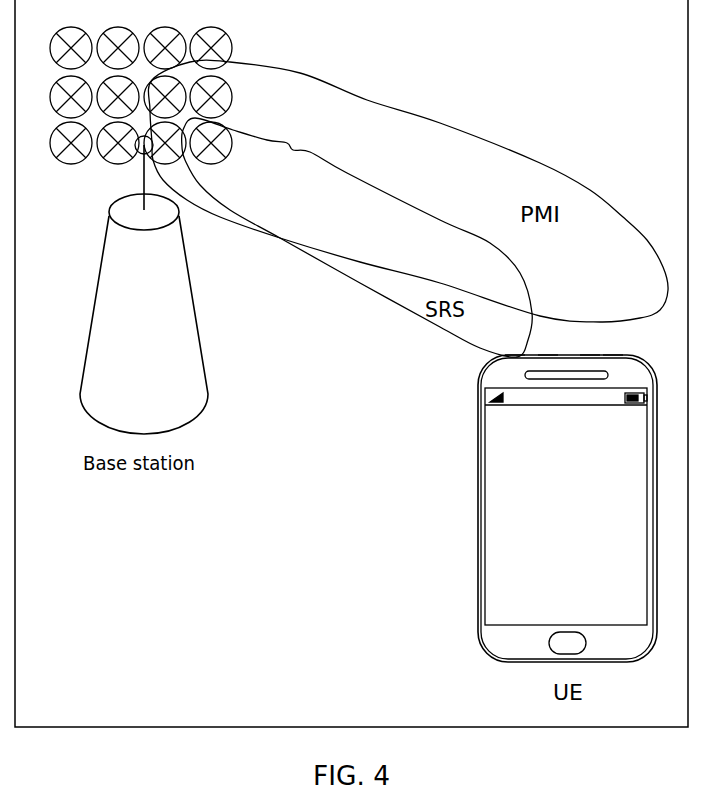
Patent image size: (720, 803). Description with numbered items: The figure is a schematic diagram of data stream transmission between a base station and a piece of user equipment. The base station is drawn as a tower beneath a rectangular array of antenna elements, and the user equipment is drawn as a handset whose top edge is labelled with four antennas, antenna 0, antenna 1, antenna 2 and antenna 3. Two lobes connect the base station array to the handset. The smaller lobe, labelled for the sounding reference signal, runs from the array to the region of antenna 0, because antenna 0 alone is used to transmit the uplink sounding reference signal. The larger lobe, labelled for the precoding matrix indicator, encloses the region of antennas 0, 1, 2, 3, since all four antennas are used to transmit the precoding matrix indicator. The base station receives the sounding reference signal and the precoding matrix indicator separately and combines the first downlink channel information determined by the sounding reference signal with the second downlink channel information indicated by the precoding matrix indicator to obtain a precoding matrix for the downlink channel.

The antenna 0 is at (517, 355).
The antenna 1 is at (548, 355).
The antenna 2 is at (590, 355).
The antenna 3 is at (613, 355).